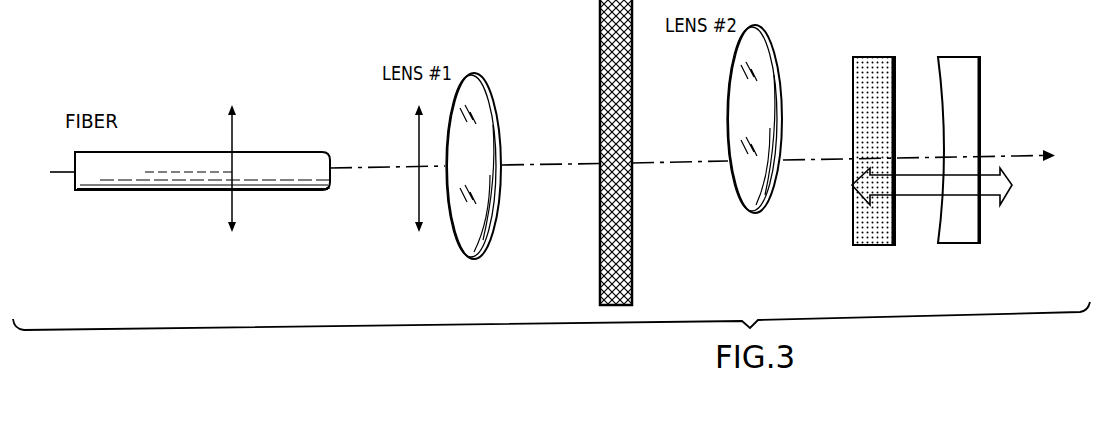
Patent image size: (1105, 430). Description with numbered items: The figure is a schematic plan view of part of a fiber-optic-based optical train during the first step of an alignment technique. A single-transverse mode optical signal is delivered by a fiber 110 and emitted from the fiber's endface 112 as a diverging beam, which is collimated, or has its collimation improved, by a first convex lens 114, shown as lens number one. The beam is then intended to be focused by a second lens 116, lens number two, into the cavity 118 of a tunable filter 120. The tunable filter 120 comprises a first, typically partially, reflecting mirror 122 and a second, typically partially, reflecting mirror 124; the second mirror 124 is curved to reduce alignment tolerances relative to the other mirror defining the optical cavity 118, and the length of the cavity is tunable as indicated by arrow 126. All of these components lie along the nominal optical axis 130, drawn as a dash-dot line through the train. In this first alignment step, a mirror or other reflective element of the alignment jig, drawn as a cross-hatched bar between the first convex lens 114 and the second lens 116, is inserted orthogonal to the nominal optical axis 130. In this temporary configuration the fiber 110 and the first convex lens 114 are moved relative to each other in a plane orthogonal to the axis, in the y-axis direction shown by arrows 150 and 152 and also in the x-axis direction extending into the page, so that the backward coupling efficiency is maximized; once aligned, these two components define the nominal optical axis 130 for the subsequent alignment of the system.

The fiber 110 is at (272, 151).
The fiber endface 112 is at (333, 172).
The first convex lens 114 is at (489, 96).
The second lens 116 is at (766, 36).
The optical cavity 118 is at (916, 63).
The tunable filter 120 is at (935, 154).
The first reflecting mirror 122 is at (870, 247).
The second reflecting mirror 124 is at (985, 245).
The arrow 126 is at (916, 200).
The nominal optical axis 130 is at (543, 172).
The arrow 150 is at (232, 126).
The arrow 152 is at (419, 126).